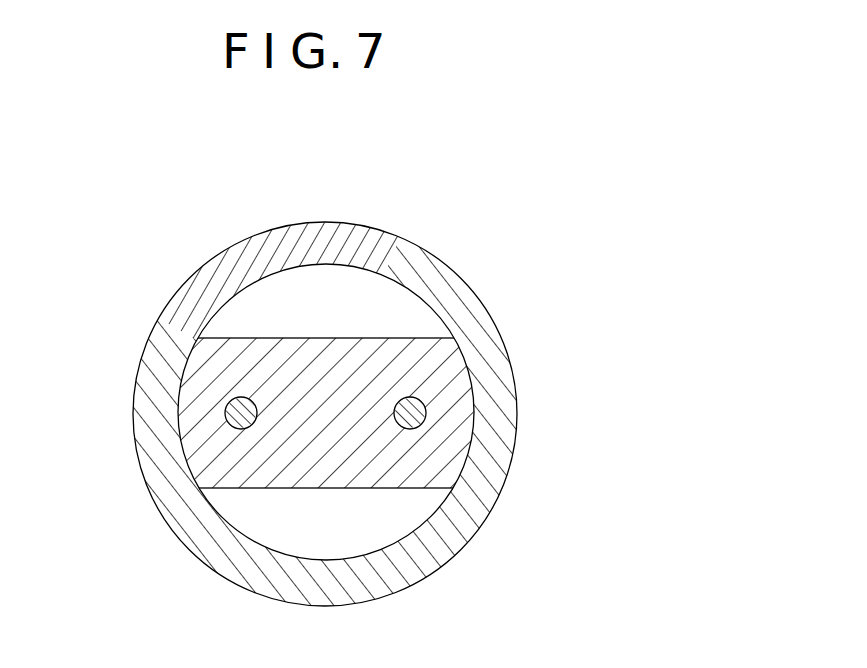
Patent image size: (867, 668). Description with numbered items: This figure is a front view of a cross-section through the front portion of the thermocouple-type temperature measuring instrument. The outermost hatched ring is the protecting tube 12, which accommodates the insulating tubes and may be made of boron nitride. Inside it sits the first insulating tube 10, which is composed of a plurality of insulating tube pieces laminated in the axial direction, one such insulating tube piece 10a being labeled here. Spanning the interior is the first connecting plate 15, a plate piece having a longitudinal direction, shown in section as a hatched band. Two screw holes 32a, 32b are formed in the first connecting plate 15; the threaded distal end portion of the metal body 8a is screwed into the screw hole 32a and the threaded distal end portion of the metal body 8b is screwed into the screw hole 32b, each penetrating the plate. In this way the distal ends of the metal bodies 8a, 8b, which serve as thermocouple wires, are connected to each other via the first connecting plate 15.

The metal body 8a is at (500, 497).
The metal body 8b is at (225, 413).
The first insulating tube 10 is at (382, 273).
The insulating tube piece 10a is at (347, 290).
The protecting tube 12 is at (498, 327).
The first connecting plate 15 is at (310, 338).
The screw hole 32a is at (422, 405).
The screw hole 32b is at (227, 400).